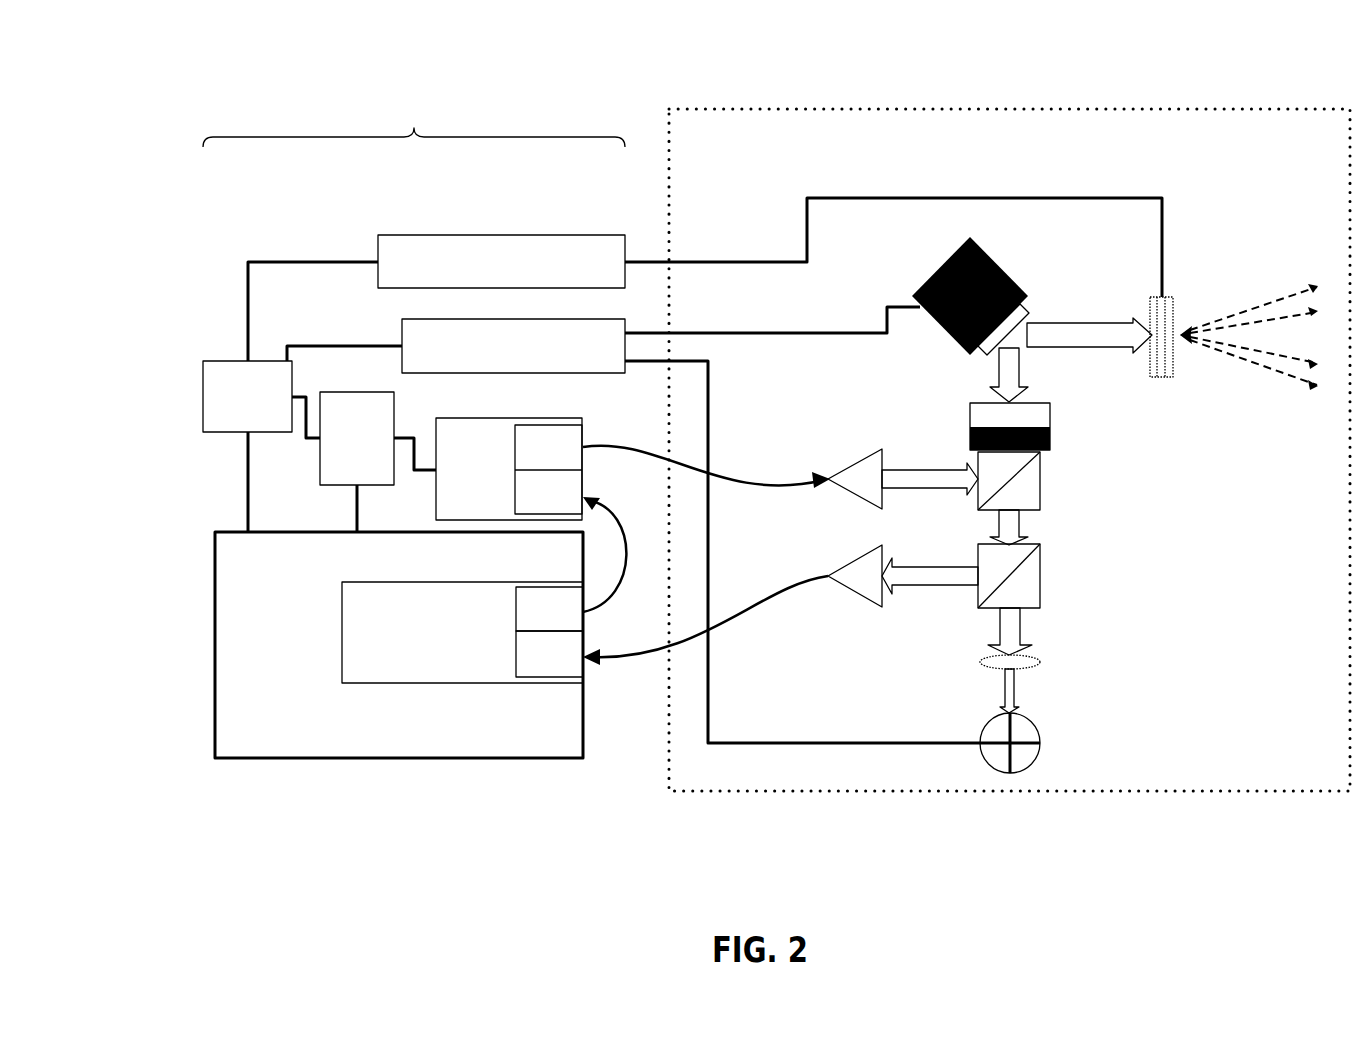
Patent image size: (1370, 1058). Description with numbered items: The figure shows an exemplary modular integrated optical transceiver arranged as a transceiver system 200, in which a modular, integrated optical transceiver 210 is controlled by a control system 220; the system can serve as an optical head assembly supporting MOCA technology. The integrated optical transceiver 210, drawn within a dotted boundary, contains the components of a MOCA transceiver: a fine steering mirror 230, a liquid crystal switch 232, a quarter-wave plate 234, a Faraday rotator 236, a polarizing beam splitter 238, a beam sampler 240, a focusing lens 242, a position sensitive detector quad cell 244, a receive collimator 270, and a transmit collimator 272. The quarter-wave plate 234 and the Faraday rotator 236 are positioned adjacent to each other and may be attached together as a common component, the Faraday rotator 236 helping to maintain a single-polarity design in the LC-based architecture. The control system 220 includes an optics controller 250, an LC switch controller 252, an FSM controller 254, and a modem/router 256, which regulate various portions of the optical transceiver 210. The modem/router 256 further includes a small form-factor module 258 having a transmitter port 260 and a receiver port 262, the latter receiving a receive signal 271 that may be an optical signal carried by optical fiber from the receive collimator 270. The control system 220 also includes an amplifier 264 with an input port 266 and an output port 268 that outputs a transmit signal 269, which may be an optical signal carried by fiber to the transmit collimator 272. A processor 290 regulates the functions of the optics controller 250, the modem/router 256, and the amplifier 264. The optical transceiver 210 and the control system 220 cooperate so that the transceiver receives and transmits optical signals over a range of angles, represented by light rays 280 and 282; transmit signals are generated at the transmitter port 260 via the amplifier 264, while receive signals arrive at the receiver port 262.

The transceiver system 200 is at (1172, 90).
The modular integrated optical transceiver 210 is at (795, 109).
The control system 220 is at (414, 121).
The fine steering mirror 230 is at (938, 270).
The liquid crystal switch 232 is at (1168, 297).
The quarter-wave plate 234 is at (970, 410).
The Faraday rotator 236 is at (1050, 448).
The polarizing beam splitter 238 is at (1045, 505).
The beam sampler 240 is at (1045, 600).
The focusing lens 242 is at (1040, 665).
The position sensitive detector quad cell 244 is at (982, 730).
The optics controller 250 is at (203, 386).
The LC switch controller 252 is at (418, 235).
The FSM controller 254 is at (402, 330).
The modem/router 256 is at (215, 640).
The small form-factor module 258 is at (342, 632).
The transmitter port 260 is at (538, 602).
The receiver port 262 is at (545, 670).
The amplifier 264 is at (470, 418).
The input port 266 is at (515, 490).
The output port 268 is at (535, 437).
The transmit signal 269 is at (738, 468).
The receive collimator 270 is at (855, 562).
The receive signal 271 is at (757, 600).
The transmit collimator 272 is at (845, 470).
The light ray 280 is at (1255, 302).
The light ray 282 is at (1252, 372).
The processor 290 is at (338, 447).